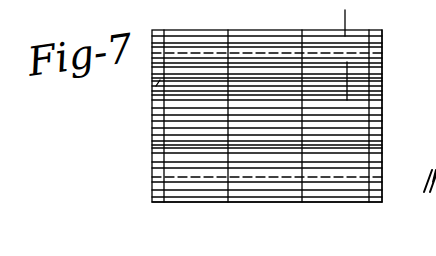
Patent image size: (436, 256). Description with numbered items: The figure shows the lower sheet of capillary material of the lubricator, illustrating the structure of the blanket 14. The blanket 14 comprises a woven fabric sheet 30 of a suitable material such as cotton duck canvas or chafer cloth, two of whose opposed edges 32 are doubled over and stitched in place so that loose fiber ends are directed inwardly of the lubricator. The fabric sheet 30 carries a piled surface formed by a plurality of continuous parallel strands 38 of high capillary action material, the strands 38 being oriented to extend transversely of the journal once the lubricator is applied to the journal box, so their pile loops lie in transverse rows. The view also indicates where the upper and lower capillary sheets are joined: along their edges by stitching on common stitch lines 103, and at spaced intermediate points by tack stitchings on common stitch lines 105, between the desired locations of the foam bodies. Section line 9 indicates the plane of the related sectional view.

The section line 9- 9 is at (353, 18).
The blanket 14 is at (150, 156).
The woven fabric sheet 30 is at (372, 104).
The opposed edges 32 is at (352, 43).
The continuous parallel strands 38 is at (158, 83).
The common stitch lines 103 is at (372, 69).
The common stitch lines 105 is at (302, 202).